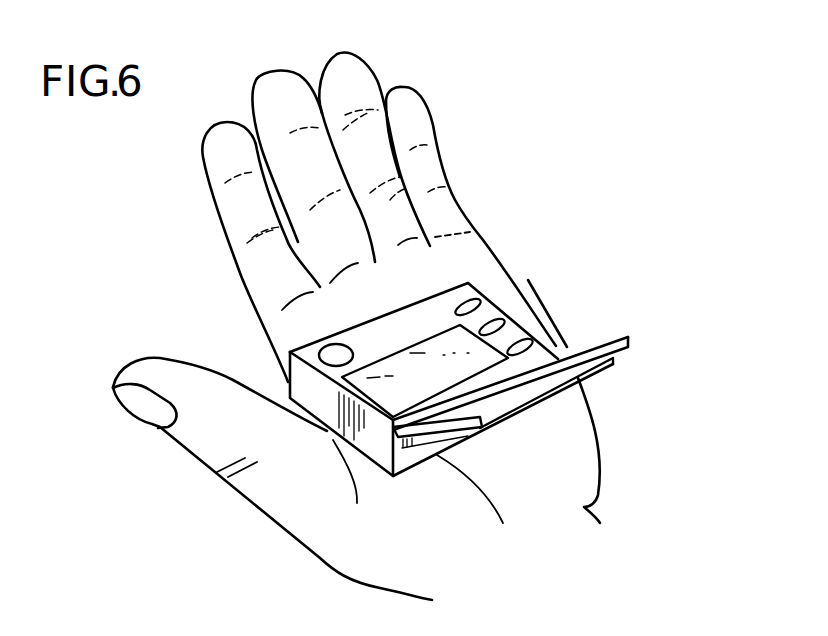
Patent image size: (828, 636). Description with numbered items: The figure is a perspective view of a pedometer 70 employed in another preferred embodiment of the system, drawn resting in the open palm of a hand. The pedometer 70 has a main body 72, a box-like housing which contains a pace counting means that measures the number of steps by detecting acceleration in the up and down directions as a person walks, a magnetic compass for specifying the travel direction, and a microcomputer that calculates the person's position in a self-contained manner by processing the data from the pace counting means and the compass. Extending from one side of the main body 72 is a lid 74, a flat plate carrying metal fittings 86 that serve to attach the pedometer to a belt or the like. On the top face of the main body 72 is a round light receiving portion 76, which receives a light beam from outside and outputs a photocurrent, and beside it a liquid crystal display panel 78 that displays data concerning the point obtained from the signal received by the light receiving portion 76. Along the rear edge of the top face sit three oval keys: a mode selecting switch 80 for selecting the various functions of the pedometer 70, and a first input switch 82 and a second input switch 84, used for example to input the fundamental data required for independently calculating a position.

The pedometer 70 is at (640, 242).
The main body 72 is at (524, 338).
The lid 74 is at (629, 339).
The light receiving portion 76 is at (331, 352).
The liquid crystal display panel 78 is at (418, 342).
The mode selecting switch 80 is at (475, 302).
The first input switch 82 is at (498, 322).
The second input switch 84 is at (533, 341).
The metal fittings 86 is at (608, 363).